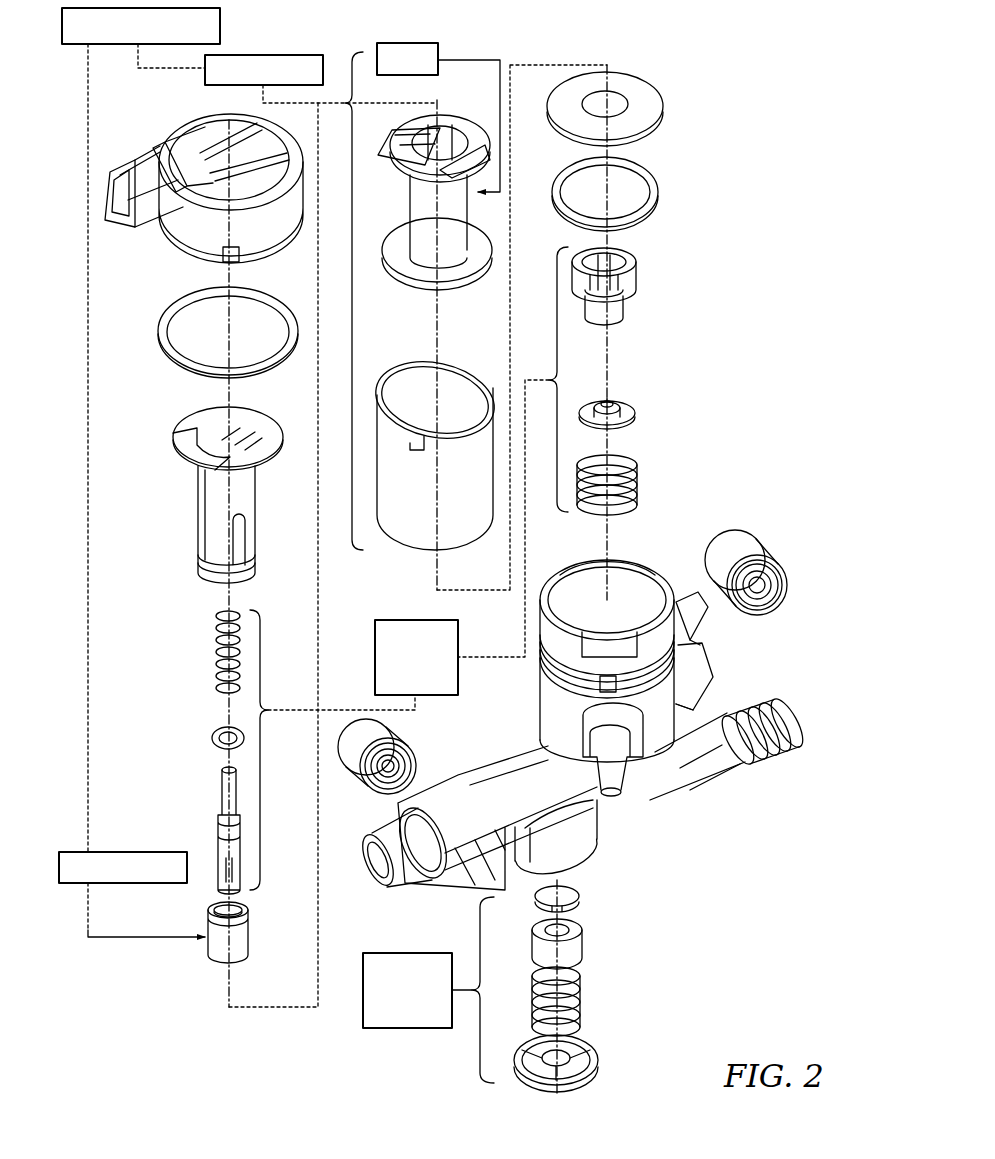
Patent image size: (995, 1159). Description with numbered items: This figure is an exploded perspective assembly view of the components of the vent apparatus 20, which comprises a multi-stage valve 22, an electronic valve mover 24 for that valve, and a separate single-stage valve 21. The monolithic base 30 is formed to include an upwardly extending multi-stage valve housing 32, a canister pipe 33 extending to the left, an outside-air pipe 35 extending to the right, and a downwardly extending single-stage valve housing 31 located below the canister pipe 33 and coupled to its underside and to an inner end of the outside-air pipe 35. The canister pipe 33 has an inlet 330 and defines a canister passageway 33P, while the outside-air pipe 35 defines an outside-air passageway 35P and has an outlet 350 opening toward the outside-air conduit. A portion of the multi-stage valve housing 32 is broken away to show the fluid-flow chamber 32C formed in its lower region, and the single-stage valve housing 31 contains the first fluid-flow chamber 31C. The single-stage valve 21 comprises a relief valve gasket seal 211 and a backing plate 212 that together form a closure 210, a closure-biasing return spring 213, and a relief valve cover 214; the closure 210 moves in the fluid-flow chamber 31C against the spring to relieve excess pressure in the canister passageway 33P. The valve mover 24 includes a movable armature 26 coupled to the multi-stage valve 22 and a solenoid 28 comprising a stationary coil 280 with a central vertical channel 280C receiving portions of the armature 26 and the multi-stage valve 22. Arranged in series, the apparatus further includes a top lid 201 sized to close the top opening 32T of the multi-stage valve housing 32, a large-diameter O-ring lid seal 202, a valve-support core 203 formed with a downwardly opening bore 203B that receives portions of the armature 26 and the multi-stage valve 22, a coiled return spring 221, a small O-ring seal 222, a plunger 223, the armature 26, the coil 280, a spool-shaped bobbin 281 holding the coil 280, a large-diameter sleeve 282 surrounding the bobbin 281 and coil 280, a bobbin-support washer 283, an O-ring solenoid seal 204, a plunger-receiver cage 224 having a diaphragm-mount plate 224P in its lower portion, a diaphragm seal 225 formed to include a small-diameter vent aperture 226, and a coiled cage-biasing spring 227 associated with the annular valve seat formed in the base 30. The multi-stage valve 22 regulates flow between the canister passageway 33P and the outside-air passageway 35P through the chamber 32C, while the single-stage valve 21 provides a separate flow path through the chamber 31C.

The vent apparatus 20 is at (783, 76).
The single-stage valve 21 is at (406, 953).
The multi-stage valve 22 is at (385, 620).
The electronic valve mover 24 is at (222, 25).
The armature 26 is at (100, 852).
The solenoid 28 is at (288, 53).
The base 30 is at (663, 628).
The single-stage valve housing 31 is at (592, 845).
The fluid-flow chamber 31C is at (542, 852).
The multi-stage valve housing 32 is at (633, 718).
The second fluid-flow chamber 32C is at (697, 724).
The top opening 32T is at (633, 578).
The canister pipe 33 is at (463, 827).
The canister passageway 33P is at (370, 866).
The outside-air pipe 35 is at (735, 747).
The outside-air passageway 35P is at (714, 758).
The top lid 201 is at (178, 116).
The large-diameter O-ring lid seal 202 is at (178, 290).
The valve-support core 203 is at (193, 473).
The downwardly opening bore 203B is at (205, 549).
The O-ring solenoid seal 204 is at (668, 196).
The closure 210 is at (592, 895).
The relief valve gasket seal 211 is at (537, 897).
The backing plate 212 is at (530, 948).
The closure-biasing return spring 213 is at (586, 998).
The relief valve cover 214 is at (600, 1062).
The coiled return spring 221 is at (205, 657).
The small O-ring seal 222 is at (207, 738).
The plunger 223 is at (212, 815).
The plunger-receiver cage 224 is at (652, 303).
The diaphragm-mount plate 224P is at (590, 322).
The diaphragm seal 225 is at (641, 412).
The small-diameter vent aperture 226 is at (613, 400).
The coiled cage-biasing spring 227 is at (646, 478).
The coil 280 is at (407, 42).
The central vertical channel 280C is at (447, 140).
The spool-shaped bobbin 281 is at (425, 217).
The large-diameter sleeve 282 is at (478, 364).
The bobbin-support washer 283 is at (668, 118).
The inlet 330 is at (400, 789).
The outlet 350 is at (793, 702).